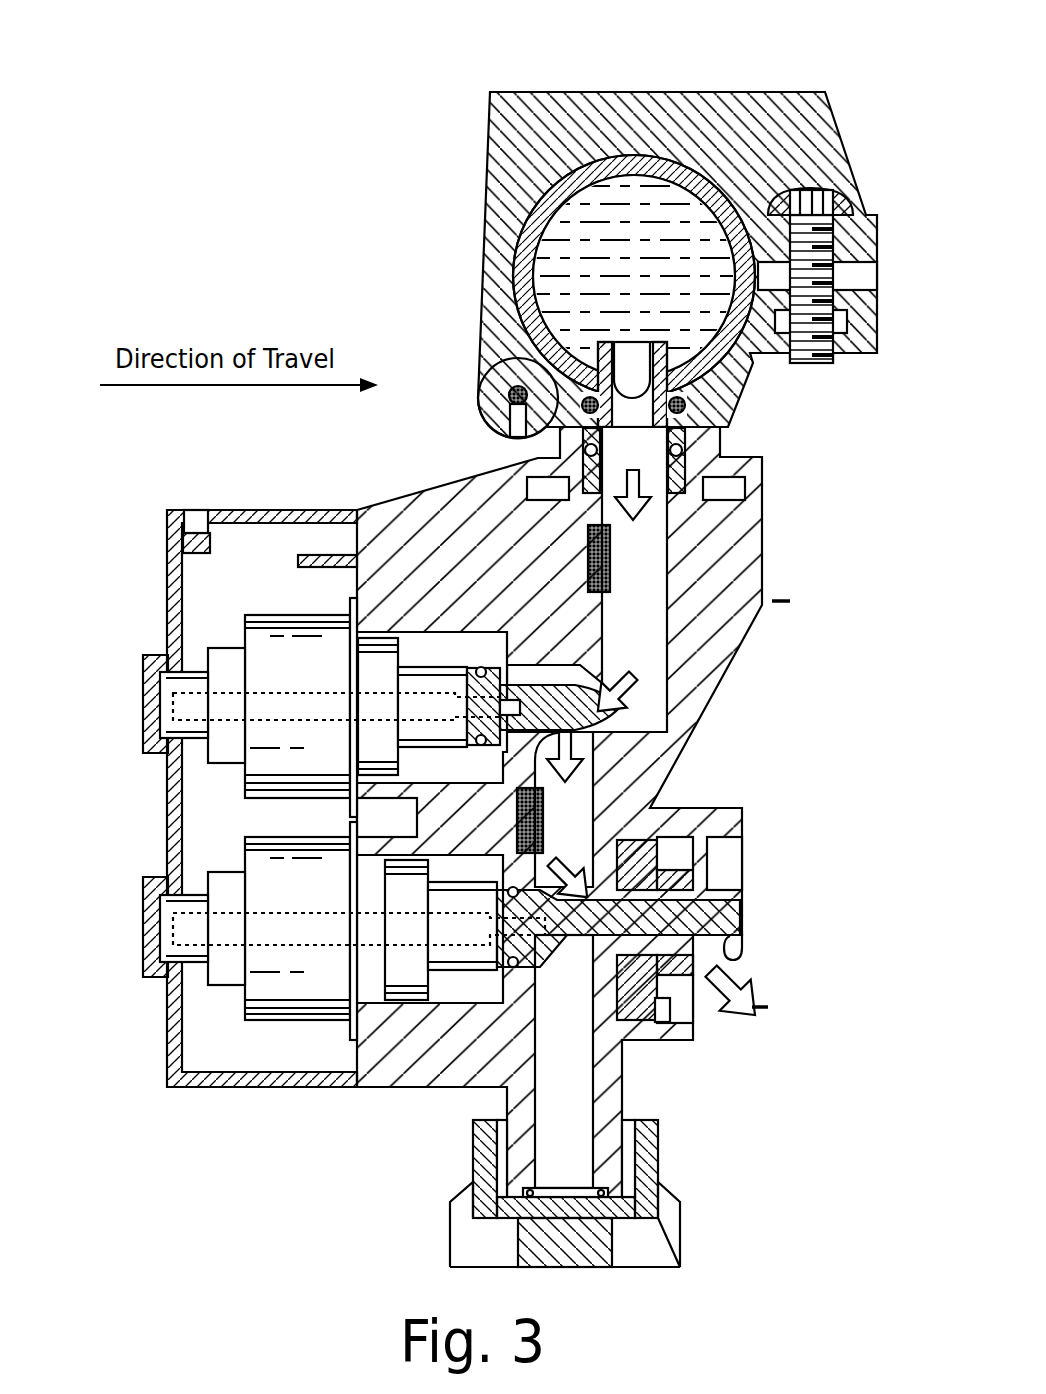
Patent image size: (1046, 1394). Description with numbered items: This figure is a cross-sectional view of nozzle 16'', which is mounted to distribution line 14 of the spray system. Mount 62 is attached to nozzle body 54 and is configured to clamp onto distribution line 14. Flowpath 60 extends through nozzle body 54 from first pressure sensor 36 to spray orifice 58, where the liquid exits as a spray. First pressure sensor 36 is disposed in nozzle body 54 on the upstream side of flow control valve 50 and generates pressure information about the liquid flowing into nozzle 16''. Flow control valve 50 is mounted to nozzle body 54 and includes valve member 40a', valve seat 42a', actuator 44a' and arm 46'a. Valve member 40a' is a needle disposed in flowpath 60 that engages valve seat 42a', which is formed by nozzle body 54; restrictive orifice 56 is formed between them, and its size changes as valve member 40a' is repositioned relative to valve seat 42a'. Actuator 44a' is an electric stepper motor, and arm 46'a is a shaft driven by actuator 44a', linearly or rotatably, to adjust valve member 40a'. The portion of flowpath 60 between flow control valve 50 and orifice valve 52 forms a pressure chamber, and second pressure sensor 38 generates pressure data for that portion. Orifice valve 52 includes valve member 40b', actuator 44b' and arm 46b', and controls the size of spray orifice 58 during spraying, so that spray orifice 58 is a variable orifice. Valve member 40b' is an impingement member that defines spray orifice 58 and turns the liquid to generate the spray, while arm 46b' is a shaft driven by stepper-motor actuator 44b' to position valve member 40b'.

The distribution line 14 is at (582, 163).
The nozzle 16'' is at (601, 265).
The first pressure sensor 36 is at (597, 562).
The second pressure sensor 38 is at (567, 818).
The valve member 40a' is at (508, 584).
The valve member 40b' is at (690, 927).
The valve seat 42a' is at (679, 806).
The actuator 44a' is at (216, 697).
The actuator 44b' is at (207, 931).
The arm 46'a is at (272, 757).
The arm 46b' is at (359, 1034).
The flow control valve 50 is at (458, 650).
The orifice valve 52 is at (465, 990).
The nozzle body 54 is at (380, 550).
The restrictive orifice 56 is at (630, 718).
The spray orifice 58 is at (714, 949).
The flowpath 60 is at (645, 568).
The mount 62 is at (750, 382).